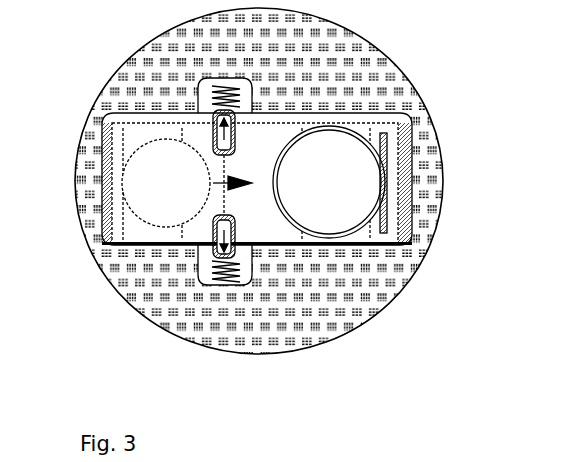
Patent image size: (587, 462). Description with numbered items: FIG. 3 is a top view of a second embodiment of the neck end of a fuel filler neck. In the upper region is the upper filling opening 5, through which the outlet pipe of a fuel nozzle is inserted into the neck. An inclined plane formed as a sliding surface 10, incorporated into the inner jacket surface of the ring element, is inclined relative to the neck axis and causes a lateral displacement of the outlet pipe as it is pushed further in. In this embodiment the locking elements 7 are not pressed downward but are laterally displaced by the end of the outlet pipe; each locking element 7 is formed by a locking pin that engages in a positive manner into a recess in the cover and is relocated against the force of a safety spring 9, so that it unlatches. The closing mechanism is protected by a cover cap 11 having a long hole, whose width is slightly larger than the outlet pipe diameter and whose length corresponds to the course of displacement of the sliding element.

The upper filling opening 5 is at (366, 138).
The locking elements 7 is at (215, 253).
The safety spring 9 is at (137, 318).
The sliding surface 10 is at (258, 178).
The cover cap 11 is at (200, 87).